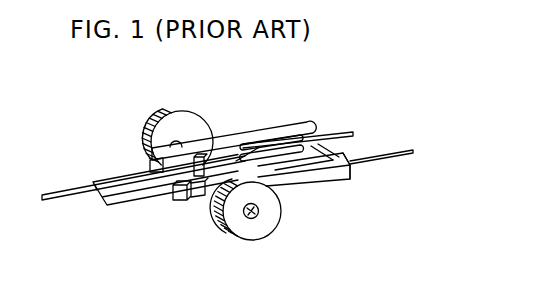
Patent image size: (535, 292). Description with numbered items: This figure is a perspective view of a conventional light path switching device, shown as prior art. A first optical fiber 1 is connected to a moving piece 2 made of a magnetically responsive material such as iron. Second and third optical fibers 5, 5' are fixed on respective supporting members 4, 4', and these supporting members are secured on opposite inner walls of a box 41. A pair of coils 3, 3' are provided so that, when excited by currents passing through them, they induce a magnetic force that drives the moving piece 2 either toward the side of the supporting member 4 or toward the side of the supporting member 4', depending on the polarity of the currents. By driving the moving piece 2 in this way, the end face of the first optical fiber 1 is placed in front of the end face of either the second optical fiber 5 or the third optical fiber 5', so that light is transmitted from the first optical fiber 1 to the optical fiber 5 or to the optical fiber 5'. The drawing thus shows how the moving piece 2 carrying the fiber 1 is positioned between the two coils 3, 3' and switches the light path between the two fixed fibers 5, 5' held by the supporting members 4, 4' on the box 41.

The first optical fiber 1 is at (54, 193).
The moving piece 2 is at (184, 196).
The coil 3 is at (177, 125).
The coil 3' is at (261, 213).
The supporting member 4 is at (234, 126).
The supporting member 4' is at (221, 145).
The box 41 is at (340, 173).
The second optical fiber 5 is at (302, 117).
The third optical fiber 5' is at (392, 139).